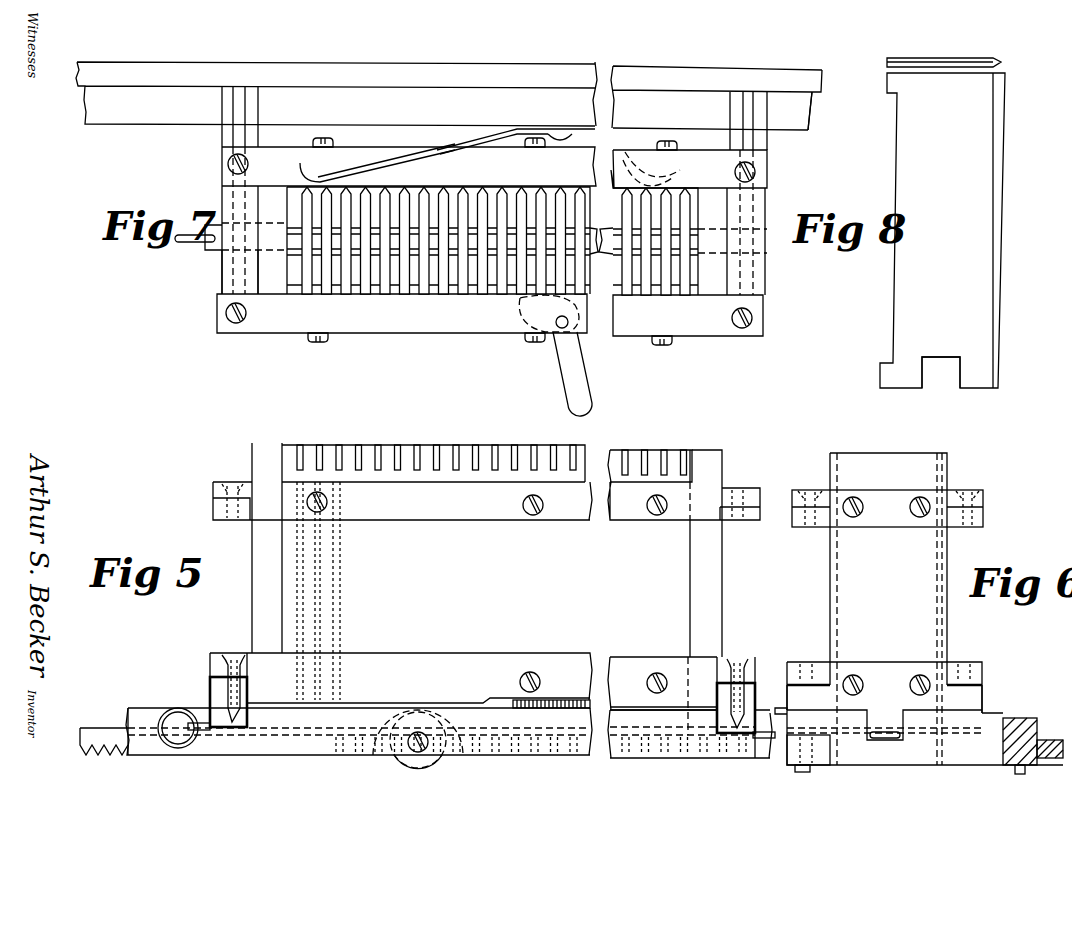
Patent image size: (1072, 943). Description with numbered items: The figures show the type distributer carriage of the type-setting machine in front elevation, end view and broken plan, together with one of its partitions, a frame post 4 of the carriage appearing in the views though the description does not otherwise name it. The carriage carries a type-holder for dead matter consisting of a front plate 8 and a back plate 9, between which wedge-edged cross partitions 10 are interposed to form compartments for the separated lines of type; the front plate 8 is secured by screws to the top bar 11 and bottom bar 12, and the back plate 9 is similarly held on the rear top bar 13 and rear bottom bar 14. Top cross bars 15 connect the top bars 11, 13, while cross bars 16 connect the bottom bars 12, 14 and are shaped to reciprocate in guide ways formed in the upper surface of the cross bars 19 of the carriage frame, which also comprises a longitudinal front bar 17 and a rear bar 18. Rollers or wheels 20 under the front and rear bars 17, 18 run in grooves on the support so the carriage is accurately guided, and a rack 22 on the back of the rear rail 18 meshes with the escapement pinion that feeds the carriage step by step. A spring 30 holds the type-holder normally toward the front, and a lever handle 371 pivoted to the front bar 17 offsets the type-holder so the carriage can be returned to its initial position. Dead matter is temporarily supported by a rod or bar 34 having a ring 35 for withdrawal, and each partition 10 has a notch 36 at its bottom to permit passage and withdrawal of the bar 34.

In FIG. 5, the frame post 4 is at (652, 640).
In FIG. 6, the frame post 4 is at (850, 592).
In FIG. 7, the front plate 8 is at (448, 297).
In FIG. 5, the front plate 8 is at (403, 463).
In FIG. 7, the back plate 9 is at (455, 190).
In FIG. 7, the cross partitions 10 is at (683, 220).
In FIG. 8, the cross partitions 10 is at (1001, 63).
In FIG. 5, the cross partitions 10 is at (472, 470).
In FIG. 7, the top bar 11 is at (358, 322).
In FIG. 5, the top bar 11 is at (478, 505).
In FIG. 6, the top bar 11 is at (812, 495).
In FIG. 5, the bottom bar 12 is at (435, 683).
In FIG. 7, the rear top bar 13 is at (268, 156).
In FIG. 6, the rear top bar 13 is at (970, 497).
In FIG. 6, the rear bottom bar 14 is at (965, 675).
In FIG. 7, the top cross bars 15 is at (225, 293).
In FIG. 5, the top cross bars 15 is at (218, 507).
In FIG. 6, the top cross bars 15 is at (984, 518).
In FIG. 5, the cross bars 16 is at (215, 693).
In FIG. 6, the cross bars 16 is at (950, 703).
In FIG. 5, the front bar 17 is at (775, 757).
In FIG. 7, the rear bar 18 is at (690, 105).
In FIG. 5, the rear bar 18 is at (137, 722).
In FIG. 6, the rear bar 18 is at (1040, 725).
In FIG. 7, the cross bars 19 is at (228, 143).
In FIG. 6, the cross bars 19 is at (883, 755).
In FIG. 5, the rollers or wheels 20 is at (440, 760).
In FIG. 6, the rollers or wheels 20 is at (809, 769).
In FIG. 7, the rack 22 is at (815, 85).
In FIG. 6, the rack 22 is at (1050, 767).
In FIG. 7, the spring 30 is at (462, 143).
In FIG. 7, the rod or bar 34 is at (210, 255).
In FIG. 5, the rod or bar 34 is at (197, 722).
In FIG. 6, the rod or bar 34 is at (886, 727).
In FIG. 7, the ring 35 is at (178, 243).
In FIG. 5, the ring 35 is at (170, 712).
In FIG. 8, the notch 36 is at (944, 365).
In FIG. 7, the lever handle 371 is at (580, 398).
In FIG. 5, the lever handle 371 is at (532, 702).